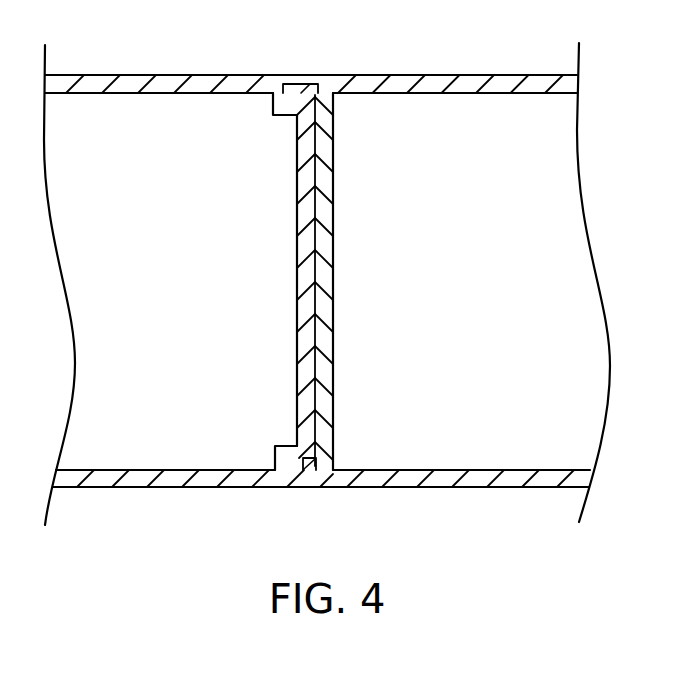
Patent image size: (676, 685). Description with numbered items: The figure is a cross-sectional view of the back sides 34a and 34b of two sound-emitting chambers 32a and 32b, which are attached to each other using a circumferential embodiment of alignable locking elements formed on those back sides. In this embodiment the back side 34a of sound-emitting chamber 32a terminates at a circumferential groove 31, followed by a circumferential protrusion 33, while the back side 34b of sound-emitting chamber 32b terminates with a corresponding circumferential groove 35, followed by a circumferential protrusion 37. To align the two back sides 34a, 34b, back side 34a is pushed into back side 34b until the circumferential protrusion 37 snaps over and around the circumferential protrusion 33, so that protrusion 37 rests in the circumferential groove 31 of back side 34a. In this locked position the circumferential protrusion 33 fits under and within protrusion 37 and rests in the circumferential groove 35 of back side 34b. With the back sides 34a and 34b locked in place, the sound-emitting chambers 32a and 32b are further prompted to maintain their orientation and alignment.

The circumferential groove 31 is at (287, 447).
The sound-emitting chamber 32a is at (172, 456).
The sound-emitting chamber 32b is at (507, 454).
The circumferential protrusion 33 is at (322, 462).
The back side 34a is at (299, 190).
The back side 34b is at (331, 220).
The circumferential groove 35 is at (320, 81).
The circumferential protrusion 37 is at (283, 84).